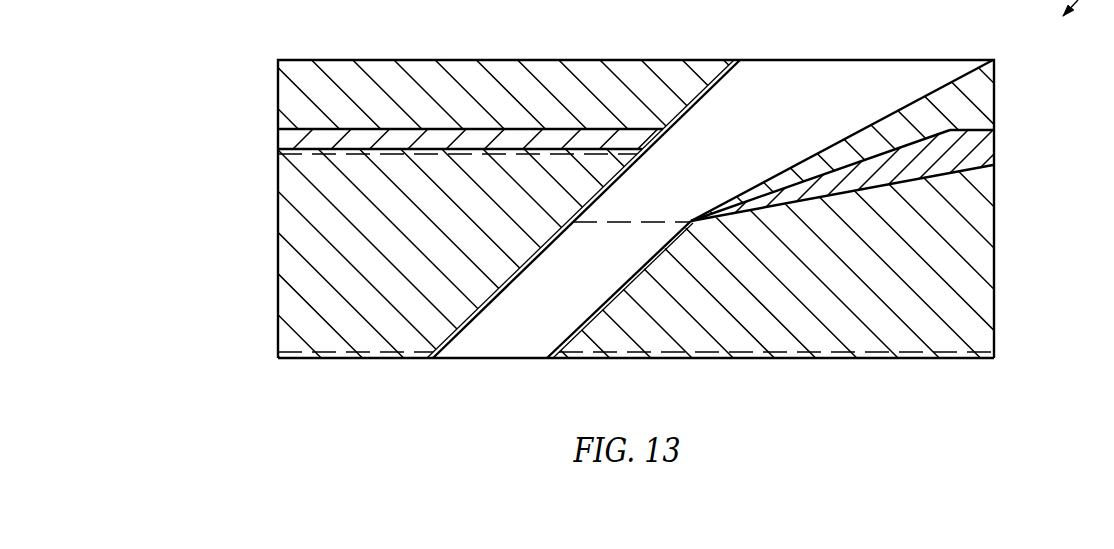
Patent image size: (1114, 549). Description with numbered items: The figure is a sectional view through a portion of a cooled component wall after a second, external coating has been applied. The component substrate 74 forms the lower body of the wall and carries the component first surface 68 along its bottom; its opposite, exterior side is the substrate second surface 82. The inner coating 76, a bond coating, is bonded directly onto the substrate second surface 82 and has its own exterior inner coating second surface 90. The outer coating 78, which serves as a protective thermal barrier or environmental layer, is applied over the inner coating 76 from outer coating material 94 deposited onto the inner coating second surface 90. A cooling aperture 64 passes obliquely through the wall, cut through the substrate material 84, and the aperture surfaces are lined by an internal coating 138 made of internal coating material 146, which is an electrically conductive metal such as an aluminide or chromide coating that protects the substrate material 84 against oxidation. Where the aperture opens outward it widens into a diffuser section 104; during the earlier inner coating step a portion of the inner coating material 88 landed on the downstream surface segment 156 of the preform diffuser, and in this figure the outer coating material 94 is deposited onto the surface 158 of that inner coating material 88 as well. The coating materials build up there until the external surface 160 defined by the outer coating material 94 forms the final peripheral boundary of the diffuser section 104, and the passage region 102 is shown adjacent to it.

The cooling aperture 64 is at (828, 82).
The component first surface 68 is at (313, 360).
The component substrate 74 is at (265, 238).
The inner coating 76 is at (270, 139).
The outer coating 78 is at (270, 87).
The substrate second surface 82 is at (324, 147).
The substrate material 84 is at (983, 250).
The inner coating material 88 is at (983, 142).
The inner coating second surface 90 is at (386, 129).
The outer coating material 94 is at (978, 90).
The channel lower portion 102 is at (508, 337).
The diffuser section 104 is at (756, 96).
The internal coating 138 is at (458, 314).
The internal coating material 146 is at (445, 343).
The surface segment 156 is at (805, 193).
The surface of the inner coating material 158 is at (870, 153).
The external surface 160 is at (918, 97).